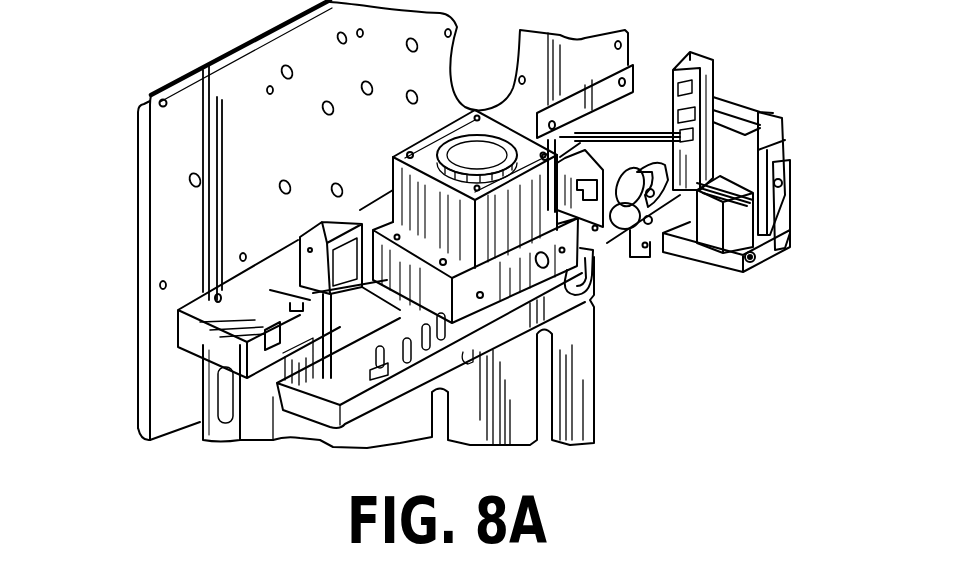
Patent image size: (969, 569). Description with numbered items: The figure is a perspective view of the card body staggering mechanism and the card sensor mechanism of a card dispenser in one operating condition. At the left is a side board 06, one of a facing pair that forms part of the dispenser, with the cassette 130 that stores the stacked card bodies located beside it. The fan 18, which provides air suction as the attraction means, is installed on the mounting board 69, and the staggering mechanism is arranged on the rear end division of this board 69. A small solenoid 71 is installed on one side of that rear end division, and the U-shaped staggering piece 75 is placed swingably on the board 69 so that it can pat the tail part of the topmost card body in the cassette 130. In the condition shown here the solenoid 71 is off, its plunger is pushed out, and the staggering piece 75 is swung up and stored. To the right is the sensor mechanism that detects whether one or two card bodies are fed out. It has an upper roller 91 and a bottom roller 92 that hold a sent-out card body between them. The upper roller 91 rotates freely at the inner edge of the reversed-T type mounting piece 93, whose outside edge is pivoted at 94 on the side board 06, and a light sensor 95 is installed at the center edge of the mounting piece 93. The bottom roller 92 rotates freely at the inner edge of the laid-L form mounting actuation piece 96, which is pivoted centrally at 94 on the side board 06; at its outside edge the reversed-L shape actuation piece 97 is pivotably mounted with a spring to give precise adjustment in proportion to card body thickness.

The side board 06 is at (188, 207).
The fan 18 is at (385, 233).
The mounting board 69 is at (207, 333).
The solenoid 71 is at (337, 230).
The staggering piece 75 is at (294, 307).
The upper roller 91 is at (623, 178).
The bottom roller 92 is at (620, 213).
The mounting piece 93 is at (720, 167).
The pivot 94 is at (757, 263).
The light sensor 95 is at (722, 77).
The mounting actuation piece 96 is at (718, 253).
The actuation piece 97 is at (783, 115).
The cassette 130 is at (193, 380).